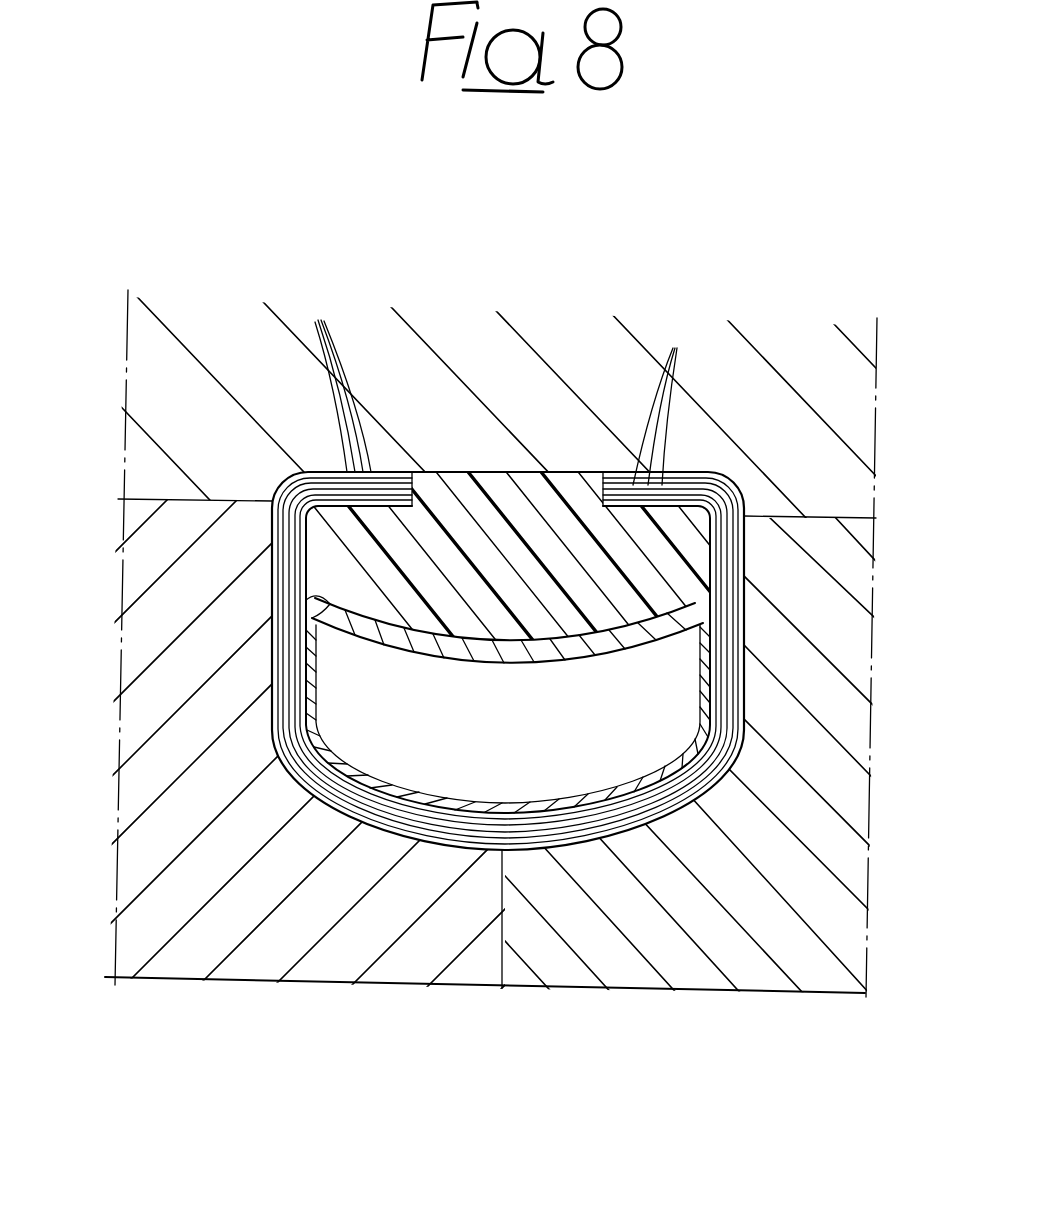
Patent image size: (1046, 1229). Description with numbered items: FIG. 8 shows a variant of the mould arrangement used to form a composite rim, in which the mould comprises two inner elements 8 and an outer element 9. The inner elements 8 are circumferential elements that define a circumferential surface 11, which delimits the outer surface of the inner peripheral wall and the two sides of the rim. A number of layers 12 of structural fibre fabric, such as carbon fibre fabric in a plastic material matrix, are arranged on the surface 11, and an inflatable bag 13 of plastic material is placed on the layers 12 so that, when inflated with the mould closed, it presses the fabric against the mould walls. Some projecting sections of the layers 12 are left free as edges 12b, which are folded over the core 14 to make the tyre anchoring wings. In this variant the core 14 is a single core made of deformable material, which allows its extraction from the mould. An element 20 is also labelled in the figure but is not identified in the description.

The inner element 8 is at (183, 754).
The outer element 9 is at (393, 405).
The circumferential surface 11 is at (637, 823).
The layers 12 is at (405, 820).
The edges 12b is at (497, 375).
The inflatable bag 13 is at (500, 662).
The core 14 is at (519, 535).
The cavity 20 is at (570, 780).